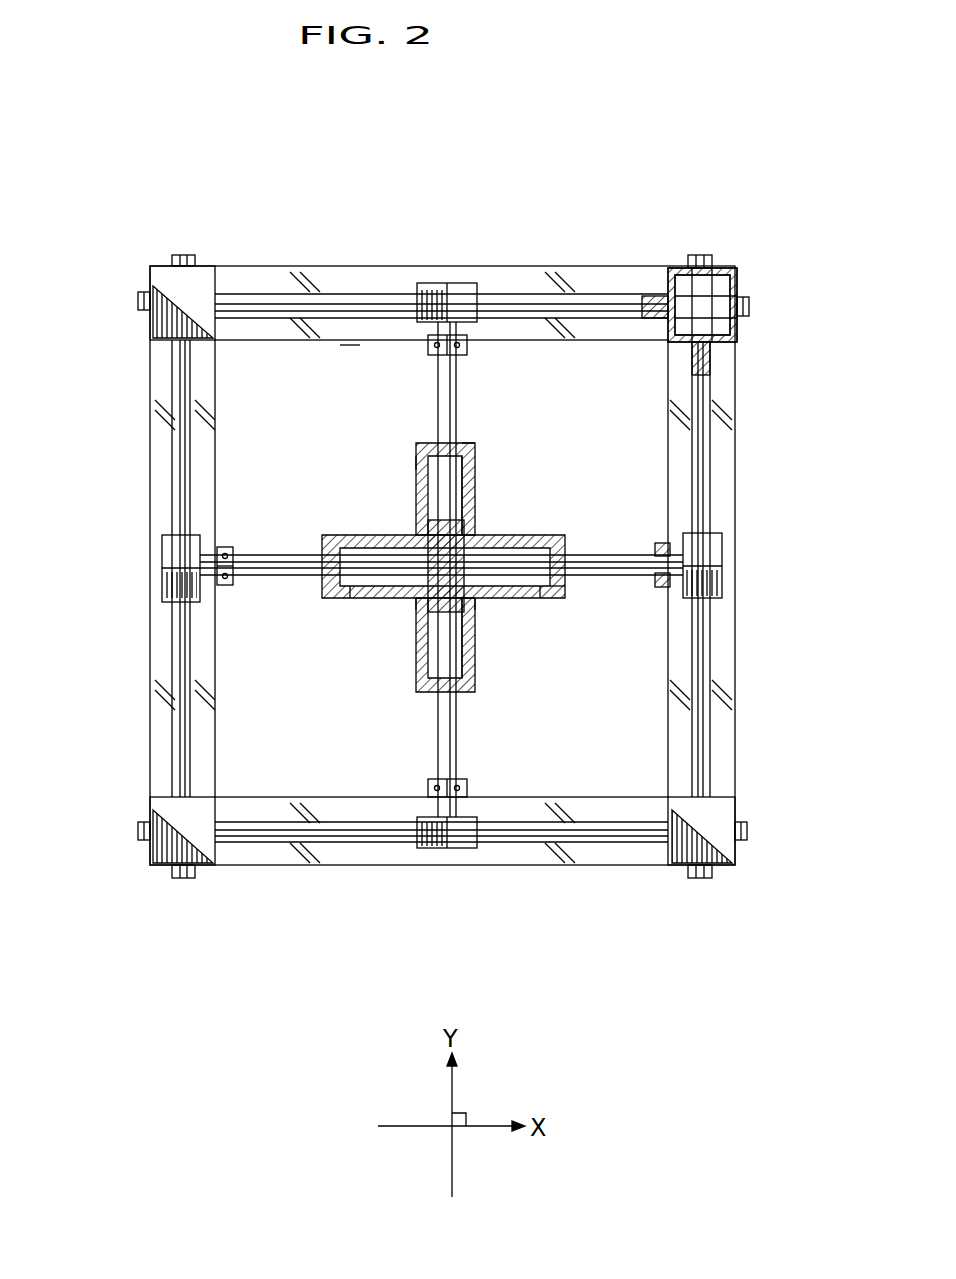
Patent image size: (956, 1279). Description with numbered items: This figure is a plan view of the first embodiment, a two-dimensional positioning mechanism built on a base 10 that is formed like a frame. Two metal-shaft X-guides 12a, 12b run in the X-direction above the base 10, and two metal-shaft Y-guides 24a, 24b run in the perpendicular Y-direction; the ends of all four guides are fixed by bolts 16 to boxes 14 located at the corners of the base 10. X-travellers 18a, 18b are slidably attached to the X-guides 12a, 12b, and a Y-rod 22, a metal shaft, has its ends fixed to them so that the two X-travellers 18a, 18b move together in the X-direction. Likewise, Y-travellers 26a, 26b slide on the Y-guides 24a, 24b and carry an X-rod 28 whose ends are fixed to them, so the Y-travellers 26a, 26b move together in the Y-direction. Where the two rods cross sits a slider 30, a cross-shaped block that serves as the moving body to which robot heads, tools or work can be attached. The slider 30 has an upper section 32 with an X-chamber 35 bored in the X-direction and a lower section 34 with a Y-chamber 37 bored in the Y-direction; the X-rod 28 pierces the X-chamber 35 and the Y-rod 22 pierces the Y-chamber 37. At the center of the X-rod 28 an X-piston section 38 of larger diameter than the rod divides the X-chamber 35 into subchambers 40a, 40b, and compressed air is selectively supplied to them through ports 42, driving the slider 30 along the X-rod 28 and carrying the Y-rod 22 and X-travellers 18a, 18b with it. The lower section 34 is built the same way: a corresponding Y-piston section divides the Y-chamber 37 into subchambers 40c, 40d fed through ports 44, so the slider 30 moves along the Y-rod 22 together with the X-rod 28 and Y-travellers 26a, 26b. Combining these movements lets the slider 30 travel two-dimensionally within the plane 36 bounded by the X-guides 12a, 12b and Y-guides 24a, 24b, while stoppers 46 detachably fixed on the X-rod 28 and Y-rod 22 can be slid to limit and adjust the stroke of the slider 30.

The base 10 is at (582, 866).
The X-guide 12a is at (322, 843).
The X-guide 12b is at (318, 294).
The box 14 is at (208, 282).
The bolt 16 is at (180, 262).
The X-traveller 18a is at (430, 848).
The X-traveller 18b is at (450, 290).
The Y-rod 22 is at (440, 398).
The Y-guide 24a is at (702, 462).
The Y-guide 24b is at (178, 483).
The Y-traveller 26a is at (712, 555).
The Y-traveller 26b is at (163, 580).
The X-rod 28 is at (290, 577).
The slider 30 is at (478, 511).
The upper section 32 is at (562, 590).
The lower section 34 is at (478, 444).
The X-chamber 35 is at (425, 608).
The plane 36 is at (352, 346).
The Y-chamber 37 is at (416, 462).
The X-piston section 38 is at (492, 598).
The subchamber 40a is at (542, 600).
The subchamber 40b is at (408, 584).
The subchamber 40c is at (462, 482).
The subchamber 40d is at (472, 665).
The port 42 is at (382, 548).
The port 44 is at (416, 498).
The stopper 46 is at (478, 344).